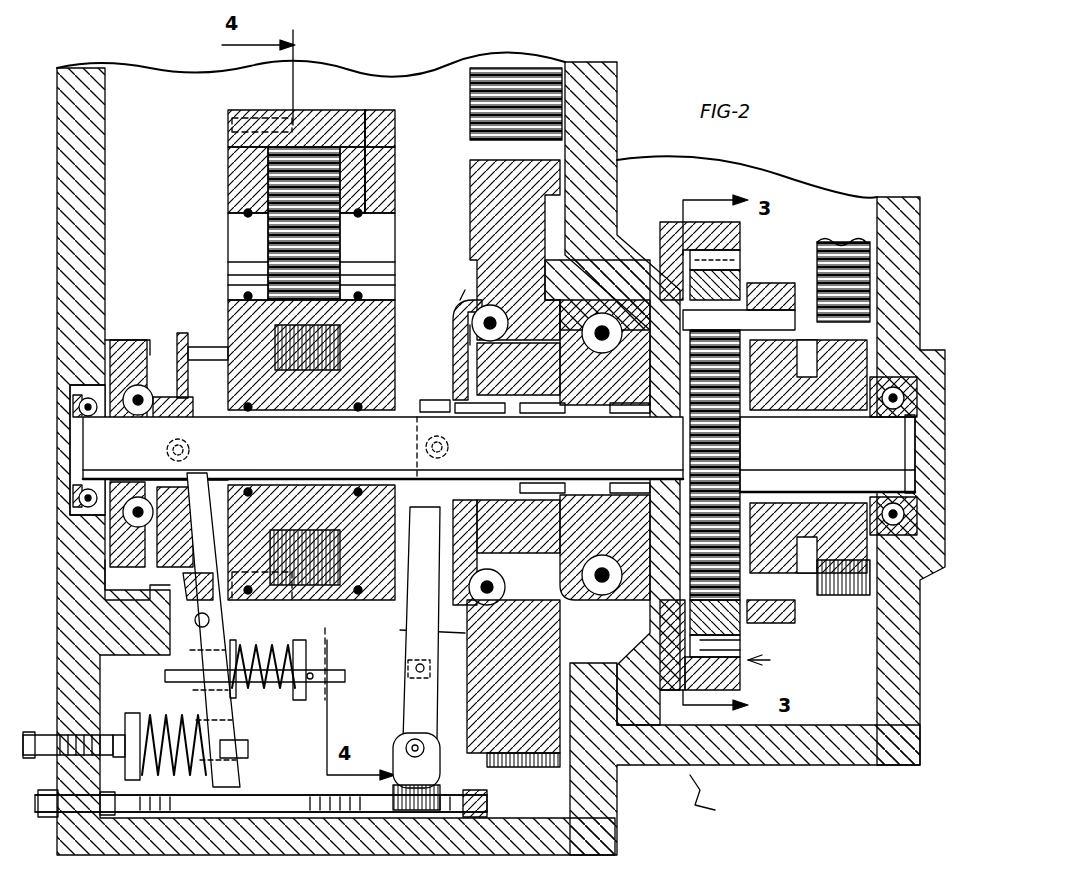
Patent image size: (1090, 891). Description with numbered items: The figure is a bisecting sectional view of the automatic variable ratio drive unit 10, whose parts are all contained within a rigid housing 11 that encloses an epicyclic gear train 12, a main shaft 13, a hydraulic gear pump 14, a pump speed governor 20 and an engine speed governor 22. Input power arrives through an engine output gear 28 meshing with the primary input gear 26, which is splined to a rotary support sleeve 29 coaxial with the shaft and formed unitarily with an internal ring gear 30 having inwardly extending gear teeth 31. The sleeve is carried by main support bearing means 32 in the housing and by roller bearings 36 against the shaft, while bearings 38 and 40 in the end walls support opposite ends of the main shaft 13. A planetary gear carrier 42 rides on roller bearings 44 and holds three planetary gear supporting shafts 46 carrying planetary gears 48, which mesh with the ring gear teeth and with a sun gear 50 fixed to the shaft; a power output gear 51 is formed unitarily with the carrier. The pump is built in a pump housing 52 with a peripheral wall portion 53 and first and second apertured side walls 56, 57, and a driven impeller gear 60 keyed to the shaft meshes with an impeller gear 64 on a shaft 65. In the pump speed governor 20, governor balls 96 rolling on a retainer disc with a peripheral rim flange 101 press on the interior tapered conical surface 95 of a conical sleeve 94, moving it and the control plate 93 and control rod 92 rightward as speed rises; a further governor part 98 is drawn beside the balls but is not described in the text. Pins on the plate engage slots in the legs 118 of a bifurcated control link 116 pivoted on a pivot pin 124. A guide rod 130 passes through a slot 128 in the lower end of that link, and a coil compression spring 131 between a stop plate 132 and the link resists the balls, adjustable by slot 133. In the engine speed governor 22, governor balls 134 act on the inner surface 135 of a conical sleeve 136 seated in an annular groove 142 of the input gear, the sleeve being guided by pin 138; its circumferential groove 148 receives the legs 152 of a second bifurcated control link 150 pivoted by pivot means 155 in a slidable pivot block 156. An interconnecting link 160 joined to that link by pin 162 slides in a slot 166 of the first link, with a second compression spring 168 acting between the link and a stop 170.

The automatic variable ratio drive unit 10 is at (713, 799).
The housing 11 is at (95, 70).
The epicyclic gear train 12 is at (773, 661).
The main shaft 13 is at (383, 448).
The hydraulic gear pump 14 is at (298, 353).
The pump speed governor 20 is at (170, 340).
The engine speed governor 22 is at (445, 322).
The primary input gear 26 is at (470, 178).
The engine output gear 28 is at (470, 105).
The rotary support sleeve 29 is at (588, 413).
The internal ring gear 30 is at (668, 225).
The inwardly extending gear teeth 31 is at (745, 638).
The main support bearing means 32 is at (597, 295).
The roller bearings 36 is at (548, 415).
The bearing 38 is at (88, 395).
The bearing 40 is at (900, 380).
The planetary gear carrier 42 is at (795, 295).
The roller bearings 44 is at (855, 418).
The planetary gear supporting shafts 46 is at (739, 455).
The planetary gears 48 is at (740, 270).
The sun gear 50 is at (745, 445).
The power output gear 51 is at (880, 345).
The pump housing 52 is at (345, 115).
The peripheral wall portion 53 is at (318, 598).
The first apertured side wall 56 is at (228, 158).
The second apertured side wall 57 is at (365, 192).
The driven impeller gear 60 is at (295, 408).
The impeller gear 64 is at (320, 223).
The shaft 65 is at (228, 245).
The control rod 92 is at (213, 345).
The control plate 93 is at (188, 385).
The conical sleeve 94 is at (150, 392).
The interior tapered conical surface 95 is at (140, 345).
The governor balls 96 is at (145, 520).
The race 98 is at (125, 542).
The peripheral rim flange 101 is at (130, 568).
The bifurcated control link 116 is at (208, 707).
The legs 118 is at (195, 462).
The pivot pin 124 is at (209, 617).
The slot 128 is at (225, 735).
The guide rod 130 is at (243, 755).
The coil compression spring 131 is at (200, 782).
The stop plate 132 is at (148, 715).
The slot 133 is at (55, 735).
The governor balls 134 is at (462, 300).
The inner surface 135 is at (505, 270).
The conical sleeve 136 is at (462, 332).
The pin 138 is at (455, 435).
The annular groove 142 is at (458, 265).
The circumferential groove 148 is at (433, 398).
The second bifurcated control link 150 is at (440, 548).
The legs 152 is at (440, 640).
The pivot means 155 is at (400, 745).
The slidable pivot block 156 is at (445, 783).
The interconnecting link 160 is at (350, 672).
The pin 162 is at (410, 678).
The slot 166 is at (205, 688).
The second compression spring 168 is at (283, 700).
The stop 170 is at (305, 690).